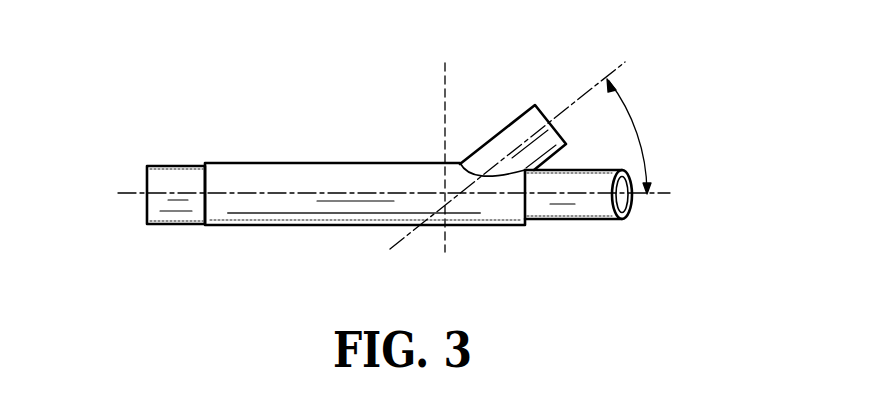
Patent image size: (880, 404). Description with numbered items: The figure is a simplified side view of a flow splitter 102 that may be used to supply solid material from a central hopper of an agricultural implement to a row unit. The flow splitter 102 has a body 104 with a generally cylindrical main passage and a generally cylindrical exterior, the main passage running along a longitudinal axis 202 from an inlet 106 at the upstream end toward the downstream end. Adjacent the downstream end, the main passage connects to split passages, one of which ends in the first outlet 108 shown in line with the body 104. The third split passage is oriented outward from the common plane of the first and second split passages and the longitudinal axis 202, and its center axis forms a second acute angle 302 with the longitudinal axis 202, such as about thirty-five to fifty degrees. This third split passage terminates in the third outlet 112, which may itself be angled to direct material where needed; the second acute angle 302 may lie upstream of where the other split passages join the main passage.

The flow splitter 102 is at (237, 125).
The body 104 is at (287, 163).
The inlet 106 is at (146, 212).
The first outlet 108 is at (582, 208).
The third outlet 112 is at (512, 125).
The longitudinal axis 202 is at (245, 199).
The second acute angle 302 is at (642, 138).